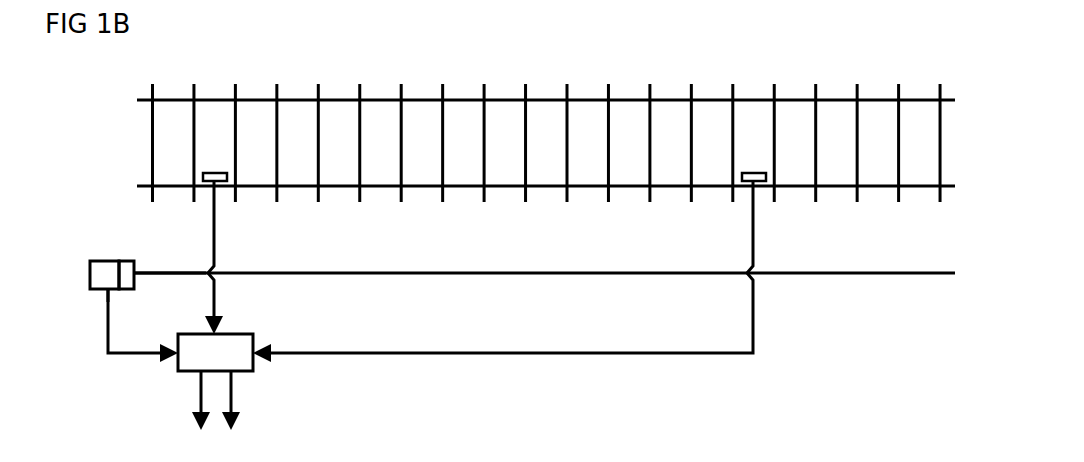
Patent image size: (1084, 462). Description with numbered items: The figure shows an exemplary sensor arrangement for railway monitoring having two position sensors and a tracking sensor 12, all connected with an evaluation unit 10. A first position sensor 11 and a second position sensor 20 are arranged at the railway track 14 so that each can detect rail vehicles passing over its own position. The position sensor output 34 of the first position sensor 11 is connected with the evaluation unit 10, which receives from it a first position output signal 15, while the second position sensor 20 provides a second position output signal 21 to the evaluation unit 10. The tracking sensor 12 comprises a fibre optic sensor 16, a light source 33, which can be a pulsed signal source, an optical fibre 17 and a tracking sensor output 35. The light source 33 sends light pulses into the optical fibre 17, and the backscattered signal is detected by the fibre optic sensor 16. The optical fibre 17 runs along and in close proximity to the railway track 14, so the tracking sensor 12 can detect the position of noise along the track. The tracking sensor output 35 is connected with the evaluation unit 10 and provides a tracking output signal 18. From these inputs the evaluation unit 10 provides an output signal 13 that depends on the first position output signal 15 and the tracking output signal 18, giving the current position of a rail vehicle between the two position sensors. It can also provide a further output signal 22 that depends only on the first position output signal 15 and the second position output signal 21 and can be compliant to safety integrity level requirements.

The evaluation unit 10 is at (256, 367).
The position sensor 11 is at (206, 170).
The tracking sensor 12 is at (103, 260).
The output signal 13 is at (198, 386).
The railway track 14 is at (872, 97).
The first position output signal 15 is at (220, 303).
The fibre optic sensor 16 is at (101, 258).
The optical fibre 17 is at (873, 278).
The tracking output signal 18 is at (138, 356).
The second position sensor 20 is at (746, 168).
The second position output signal 21 is at (552, 355).
The further output signal 22 is at (234, 388).
The light source 33 is at (128, 291).
The position sensor output 34 is at (220, 197).
The tracking sensor output 35 is at (106, 290).